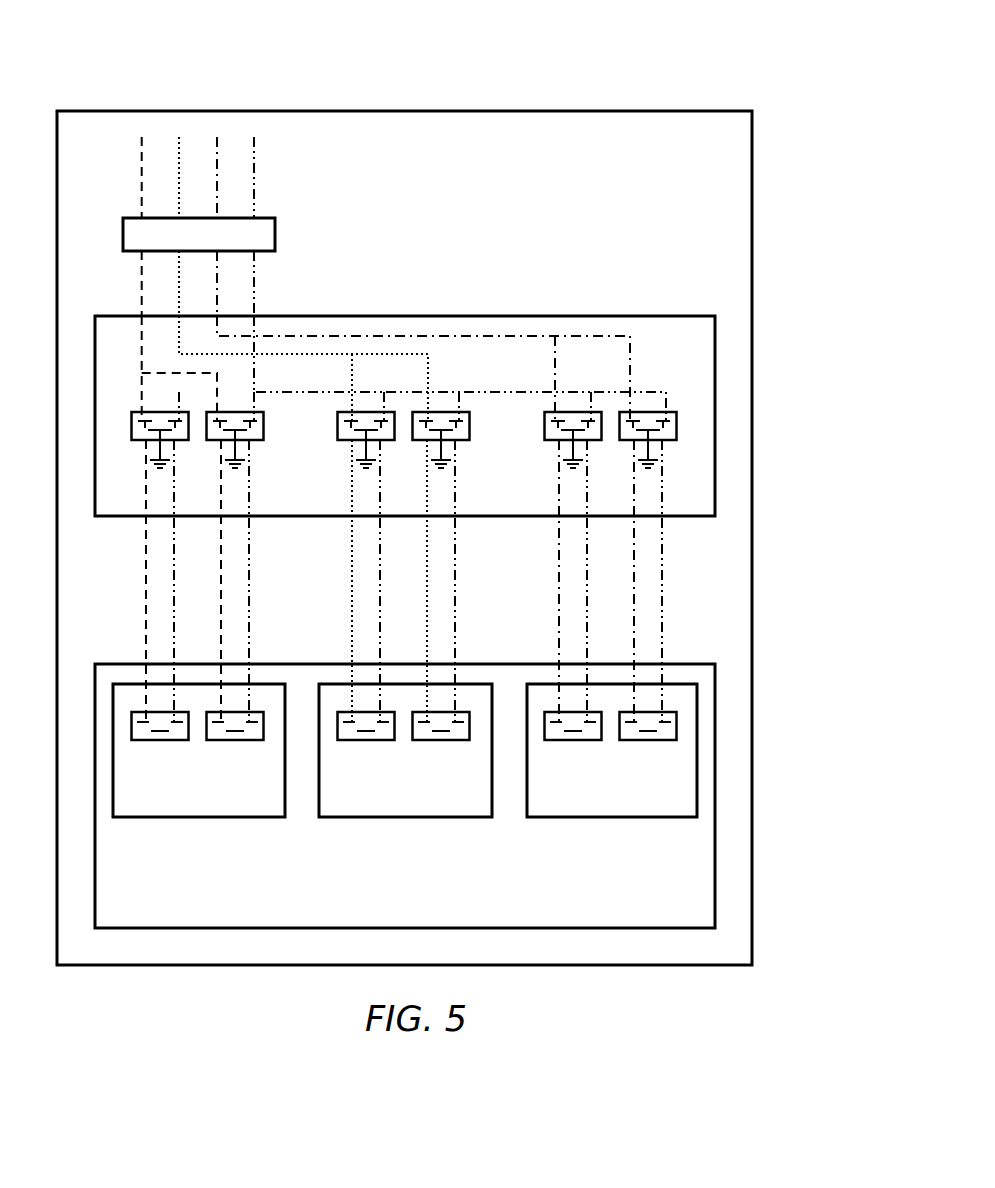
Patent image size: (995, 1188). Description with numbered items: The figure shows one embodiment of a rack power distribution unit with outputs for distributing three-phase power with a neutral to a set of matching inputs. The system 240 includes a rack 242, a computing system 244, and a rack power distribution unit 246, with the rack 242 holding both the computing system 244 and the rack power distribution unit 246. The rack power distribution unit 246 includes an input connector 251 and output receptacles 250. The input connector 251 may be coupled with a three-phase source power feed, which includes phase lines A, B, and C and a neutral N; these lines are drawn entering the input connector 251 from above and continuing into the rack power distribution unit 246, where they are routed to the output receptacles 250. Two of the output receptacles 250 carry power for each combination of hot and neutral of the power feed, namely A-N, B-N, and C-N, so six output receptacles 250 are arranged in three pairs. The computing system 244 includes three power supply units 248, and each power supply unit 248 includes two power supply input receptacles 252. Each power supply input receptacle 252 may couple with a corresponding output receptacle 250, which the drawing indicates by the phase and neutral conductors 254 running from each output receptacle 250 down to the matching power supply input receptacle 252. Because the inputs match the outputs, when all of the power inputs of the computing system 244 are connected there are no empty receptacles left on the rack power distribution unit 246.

The system 240 is at (628, 81).
The rack 242 is at (745, 146).
The computing system 244 is at (707, 919).
The rack power distribution unit 246 is at (707, 348).
The power supply units 248 is at (275, 807).
The output receptacles 250 is at (136, 411).
The input connector 251 is at (275, 232).
The power supply input receptacles 252 is at (163, 741).
The conductor 254 is at (147, 622).